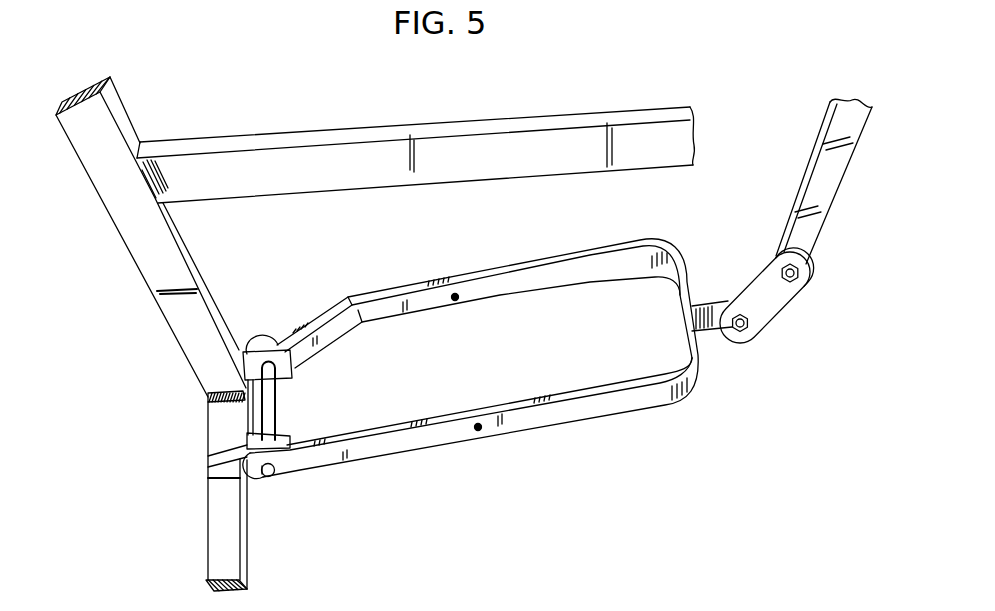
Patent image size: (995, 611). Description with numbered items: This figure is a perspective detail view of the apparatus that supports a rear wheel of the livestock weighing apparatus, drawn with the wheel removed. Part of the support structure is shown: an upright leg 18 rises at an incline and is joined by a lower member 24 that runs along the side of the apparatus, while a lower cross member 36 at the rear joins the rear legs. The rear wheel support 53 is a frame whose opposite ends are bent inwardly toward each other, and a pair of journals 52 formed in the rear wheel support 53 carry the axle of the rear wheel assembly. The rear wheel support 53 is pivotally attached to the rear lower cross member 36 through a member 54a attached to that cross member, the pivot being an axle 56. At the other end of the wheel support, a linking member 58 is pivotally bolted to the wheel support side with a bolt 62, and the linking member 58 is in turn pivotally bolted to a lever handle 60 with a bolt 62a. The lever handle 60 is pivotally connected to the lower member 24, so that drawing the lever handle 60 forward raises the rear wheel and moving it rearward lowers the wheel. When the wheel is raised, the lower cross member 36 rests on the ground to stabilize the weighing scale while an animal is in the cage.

The upright leg 18 is at (176, 319).
The lower member 24 is at (314, 155).
The lower cross member 36 is at (215, 553).
The journal 52 is at (452, 295).
The rear wheel support 53 is at (468, 288).
The member 54a is at (262, 340).
The axle 56 is at (280, 420).
The linking member 58 is at (252, 482).
The lever handle 60 is at (797, 226).
The bolt 62 is at (741, 333).
The bolt 62a is at (798, 277).